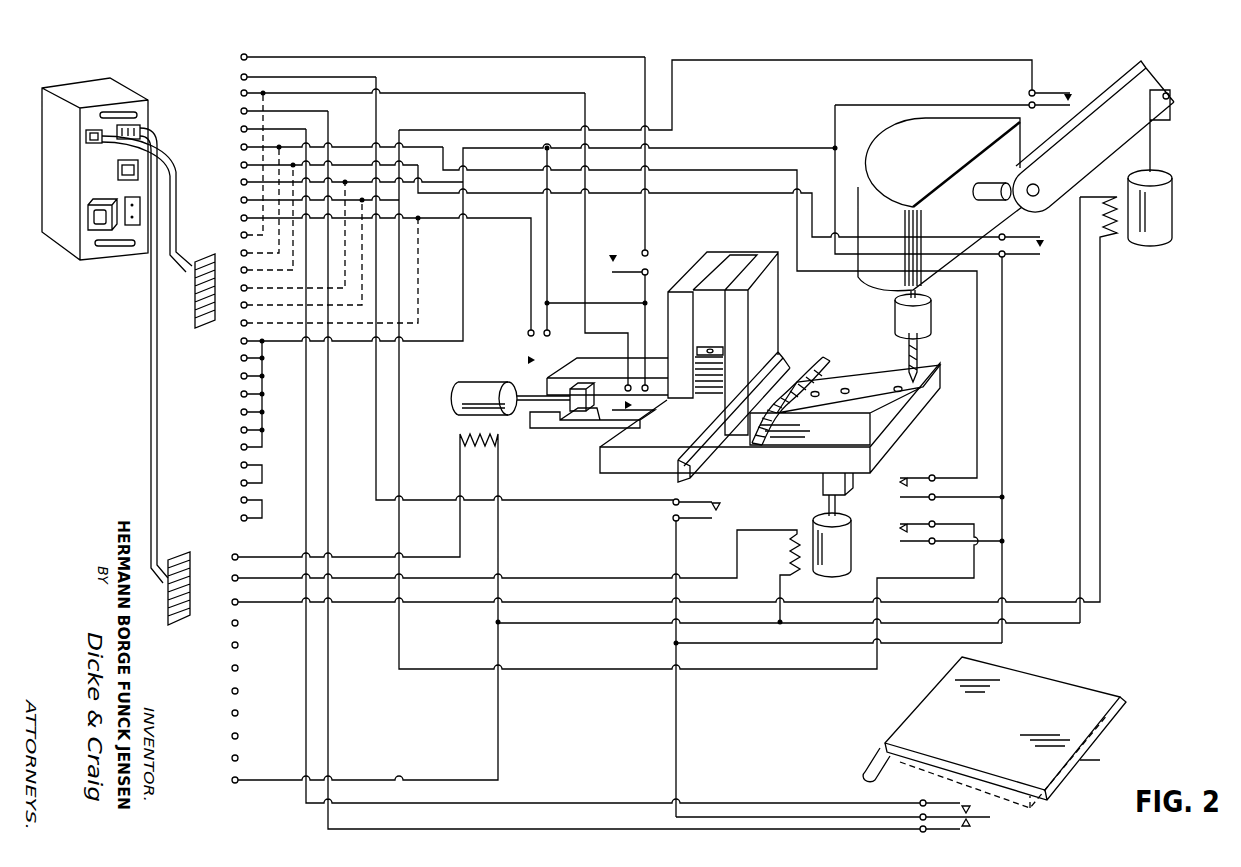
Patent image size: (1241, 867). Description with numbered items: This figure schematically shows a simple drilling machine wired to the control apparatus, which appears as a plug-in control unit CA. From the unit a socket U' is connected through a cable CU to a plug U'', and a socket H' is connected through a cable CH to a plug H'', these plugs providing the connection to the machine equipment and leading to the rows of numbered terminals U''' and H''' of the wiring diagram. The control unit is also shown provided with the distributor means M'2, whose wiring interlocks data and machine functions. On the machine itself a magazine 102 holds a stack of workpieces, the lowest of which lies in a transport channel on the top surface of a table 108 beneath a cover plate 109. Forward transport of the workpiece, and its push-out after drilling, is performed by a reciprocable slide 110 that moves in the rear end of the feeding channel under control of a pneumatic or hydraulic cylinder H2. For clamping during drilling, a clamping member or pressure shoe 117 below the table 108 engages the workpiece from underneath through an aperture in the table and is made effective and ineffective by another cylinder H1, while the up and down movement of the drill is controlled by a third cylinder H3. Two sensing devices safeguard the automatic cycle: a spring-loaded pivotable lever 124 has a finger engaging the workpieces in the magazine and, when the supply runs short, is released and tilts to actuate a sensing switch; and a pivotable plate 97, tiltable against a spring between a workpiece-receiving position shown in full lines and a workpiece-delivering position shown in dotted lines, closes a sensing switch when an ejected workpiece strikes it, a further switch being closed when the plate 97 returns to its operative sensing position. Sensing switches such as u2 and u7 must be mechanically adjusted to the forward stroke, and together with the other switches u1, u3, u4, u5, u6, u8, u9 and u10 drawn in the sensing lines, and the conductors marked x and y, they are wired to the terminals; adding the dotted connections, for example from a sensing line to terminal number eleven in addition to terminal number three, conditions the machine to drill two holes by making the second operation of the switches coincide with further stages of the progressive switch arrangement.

The plug-in control unit CA is at (110, 93).
The socket U' is at (79, 136).
The socket H' is at (144, 127).
The cable CU is at (168, 160).
The distributor means M'2 is at (80, 210).
The plug U'' is at (202, 282).
The terminal strip U''' is at (233, 276).
The cable CH is at (145, 355).
The plug H'' is at (171, 580).
The terminal strip H''' is at (214, 662).
The pneumatic or hydraulic cylinder H1 is at (851, 556).
The pneumatic or hydraulic cylinder H2 is at (458, 402).
The pneumatic or hydraulic cylinder H3 is at (1172, 208).
The pivotable plate 97 is at (1068, 697).
The magazine 102 is at (765, 332).
The table 108 is at (905, 436).
The cover plate 109 is at (803, 358).
The reciprocable slide 110 is at (568, 430).
The clamping member or pressure shoe 117 is at (822, 481).
The pivotable lever 124 is at (703, 458).
The contact u1 is at (634, 252).
The sensing switch u2 is at (646, 394).
The contact u3 is at (931, 475).
The contact u4 is at (929, 545).
The contact u5 is at (1008, 257).
The contact u6 is at (1036, 94).
The sensing switch u7 is at (529, 337).
The contact u8 is at (679, 521).
The contact u9 is at (926, 832).
The contact u10 is at (924, 801).
The conductor x is at (1080, 527).
The conductor y is at (547, 258).